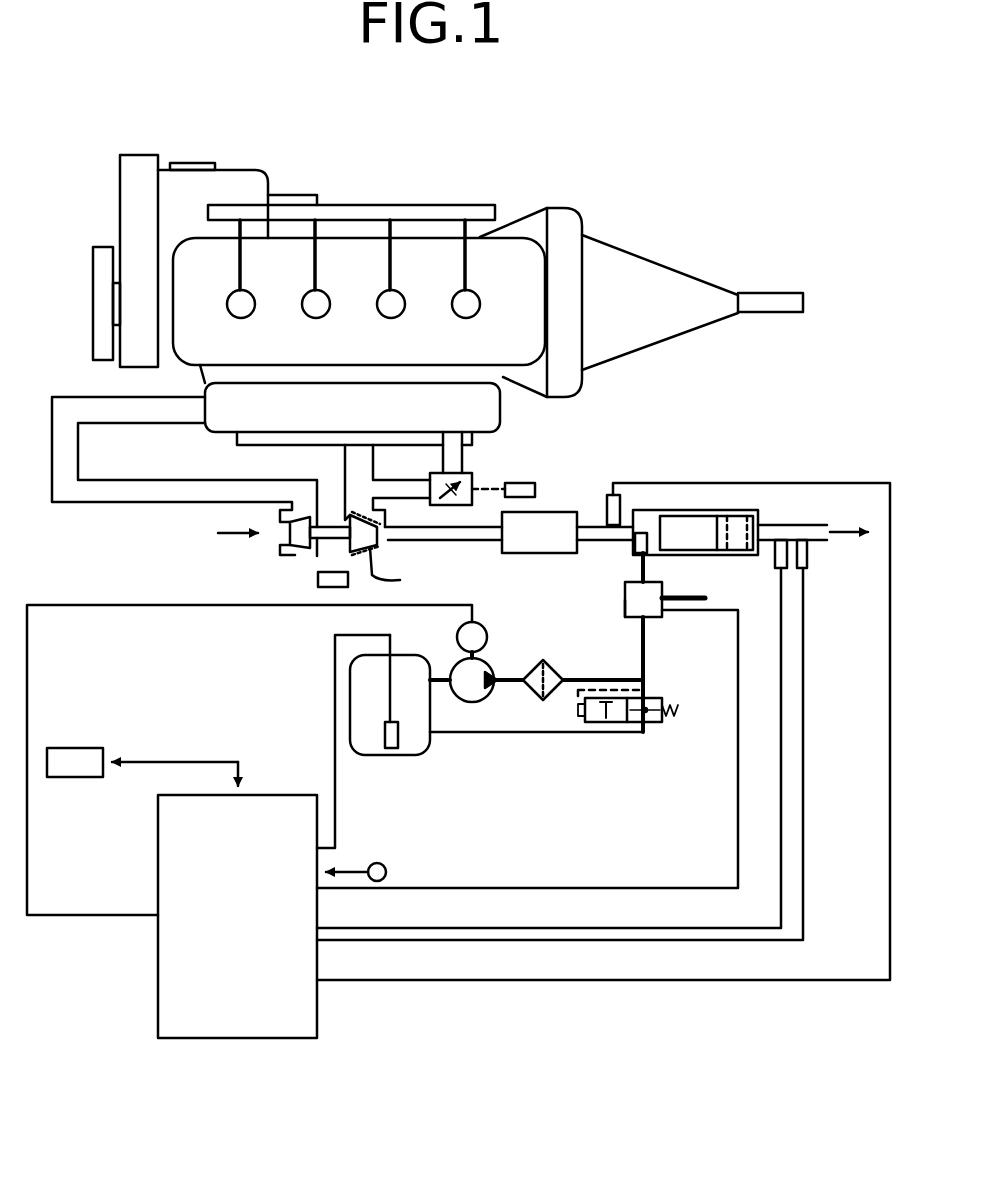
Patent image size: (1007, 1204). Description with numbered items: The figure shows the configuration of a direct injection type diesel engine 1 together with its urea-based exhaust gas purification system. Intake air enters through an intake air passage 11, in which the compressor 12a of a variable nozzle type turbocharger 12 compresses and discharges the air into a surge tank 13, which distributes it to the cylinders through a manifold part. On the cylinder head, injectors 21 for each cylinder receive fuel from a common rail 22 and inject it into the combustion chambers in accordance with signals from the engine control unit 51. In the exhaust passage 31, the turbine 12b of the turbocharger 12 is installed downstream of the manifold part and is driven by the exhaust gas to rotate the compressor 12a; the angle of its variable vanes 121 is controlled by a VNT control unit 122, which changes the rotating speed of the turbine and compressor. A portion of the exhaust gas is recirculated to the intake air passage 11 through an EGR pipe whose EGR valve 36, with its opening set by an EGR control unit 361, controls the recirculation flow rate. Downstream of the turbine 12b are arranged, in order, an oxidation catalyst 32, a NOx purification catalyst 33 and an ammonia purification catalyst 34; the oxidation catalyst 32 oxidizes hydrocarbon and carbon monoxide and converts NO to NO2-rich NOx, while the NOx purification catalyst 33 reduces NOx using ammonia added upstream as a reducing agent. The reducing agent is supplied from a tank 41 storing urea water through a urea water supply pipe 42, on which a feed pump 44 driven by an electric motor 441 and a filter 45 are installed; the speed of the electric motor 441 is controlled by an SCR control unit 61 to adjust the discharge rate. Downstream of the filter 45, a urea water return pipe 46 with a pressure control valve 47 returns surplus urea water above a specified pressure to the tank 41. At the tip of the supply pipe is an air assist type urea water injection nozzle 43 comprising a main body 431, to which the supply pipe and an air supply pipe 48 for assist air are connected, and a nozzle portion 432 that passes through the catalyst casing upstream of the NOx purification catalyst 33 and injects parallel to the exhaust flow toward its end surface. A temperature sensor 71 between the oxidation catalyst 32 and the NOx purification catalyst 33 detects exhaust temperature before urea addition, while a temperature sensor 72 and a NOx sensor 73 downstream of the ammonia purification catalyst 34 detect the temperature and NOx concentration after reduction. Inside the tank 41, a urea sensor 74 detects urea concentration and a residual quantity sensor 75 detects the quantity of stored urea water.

The engine 1 is at (574, 168).
The intake air passage 11 is at (68, 397).
The variable nozzle type turbocharger 12 is at (341, 521).
The compressor 12a is at (293, 556).
The turbine 12b is at (377, 548).
The variable vanes 121 is at (407, 572).
The VNT control unit 122 is at (348, 580).
The surge tank 13 is at (206, 432).
The injectors 21 is at (246, 319).
The common rail 22 is at (456, 205).
The exhaust passage 31 is at (488, 542).
The oxidation catalyst 32 is at (545, 512).
The NOx purification catalyst 33 is at (698, 555).
The ammonia purification catalyst 34 is at (717, 535).
The EGR valve 36 is at (474, 488).
The EGR control unit 361 is at (537, 483).
The tank 41 is at (383, 741).
The urea water supply pipe 42 is at (647, 665).
The urea water injection nozzle 43 is at (527, 710).
The main body 431 is at (625, 606).
The nozzle portion 432 is at (633, 550).
The feed pump 44 is at (283, 759).
The electric motor 441 is at (488, 632).
The filter 45 is at (548, 666).
The urea water return pipe 46 is at (540, 734).
The pressure control valve 47 is at (662, 698).
The air supply pipe 48 is at (683, 583).
The engine control unit 51 is at (80, 748).
The SCR control unit 61 is at (283, 1038).
The temperature sensor 71 is at (610, 495).
The temperature sensor 72 is at (777, 568).
The NOx sensor 73 is at (805, 568).
The urea sensor 74 is at (383, 752).
The residual quantity sensor 75 is at (380, 863).